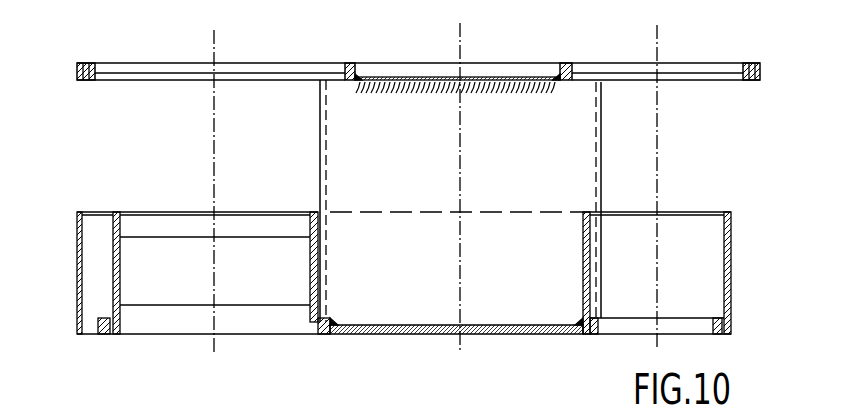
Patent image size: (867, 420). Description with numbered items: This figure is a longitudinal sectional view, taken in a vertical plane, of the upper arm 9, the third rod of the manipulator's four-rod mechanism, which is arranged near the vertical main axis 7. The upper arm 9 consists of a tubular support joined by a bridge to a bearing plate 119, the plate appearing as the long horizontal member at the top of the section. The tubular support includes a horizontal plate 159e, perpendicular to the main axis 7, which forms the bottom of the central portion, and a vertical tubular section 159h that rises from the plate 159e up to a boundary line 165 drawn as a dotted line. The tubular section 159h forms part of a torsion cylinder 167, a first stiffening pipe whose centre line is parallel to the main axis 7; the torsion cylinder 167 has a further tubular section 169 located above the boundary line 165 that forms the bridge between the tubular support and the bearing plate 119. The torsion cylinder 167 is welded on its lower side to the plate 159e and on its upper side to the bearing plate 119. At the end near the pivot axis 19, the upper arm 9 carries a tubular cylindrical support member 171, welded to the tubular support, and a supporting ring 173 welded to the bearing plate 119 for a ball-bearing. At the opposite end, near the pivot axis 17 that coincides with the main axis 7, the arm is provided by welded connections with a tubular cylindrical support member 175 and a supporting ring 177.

The main axis 7 is at (213, 143).
The pivot axis 17 is at (187, 192).
The pivot axis 19 is at (658, 173).
The upper arm 9 is at (426, 55).
The bearing plate 119 is at (497, 77).
The horizontal plate 159e is at (504, 325).
The vertical tubular section 159h is at (542, 233).
The boundary line 165 is at (374, 211).
The torsion cylinder 167 is at (318, 177).
The further tubular section 169 is at (422, 108).
The tubular cylindrical support member 171 is at (732, 285).
The supporting ring 173 is at (758, 63).
The tubular cylindrical support member 175 is at (121, 278).
The supporting ring 177 is at (96, 72).